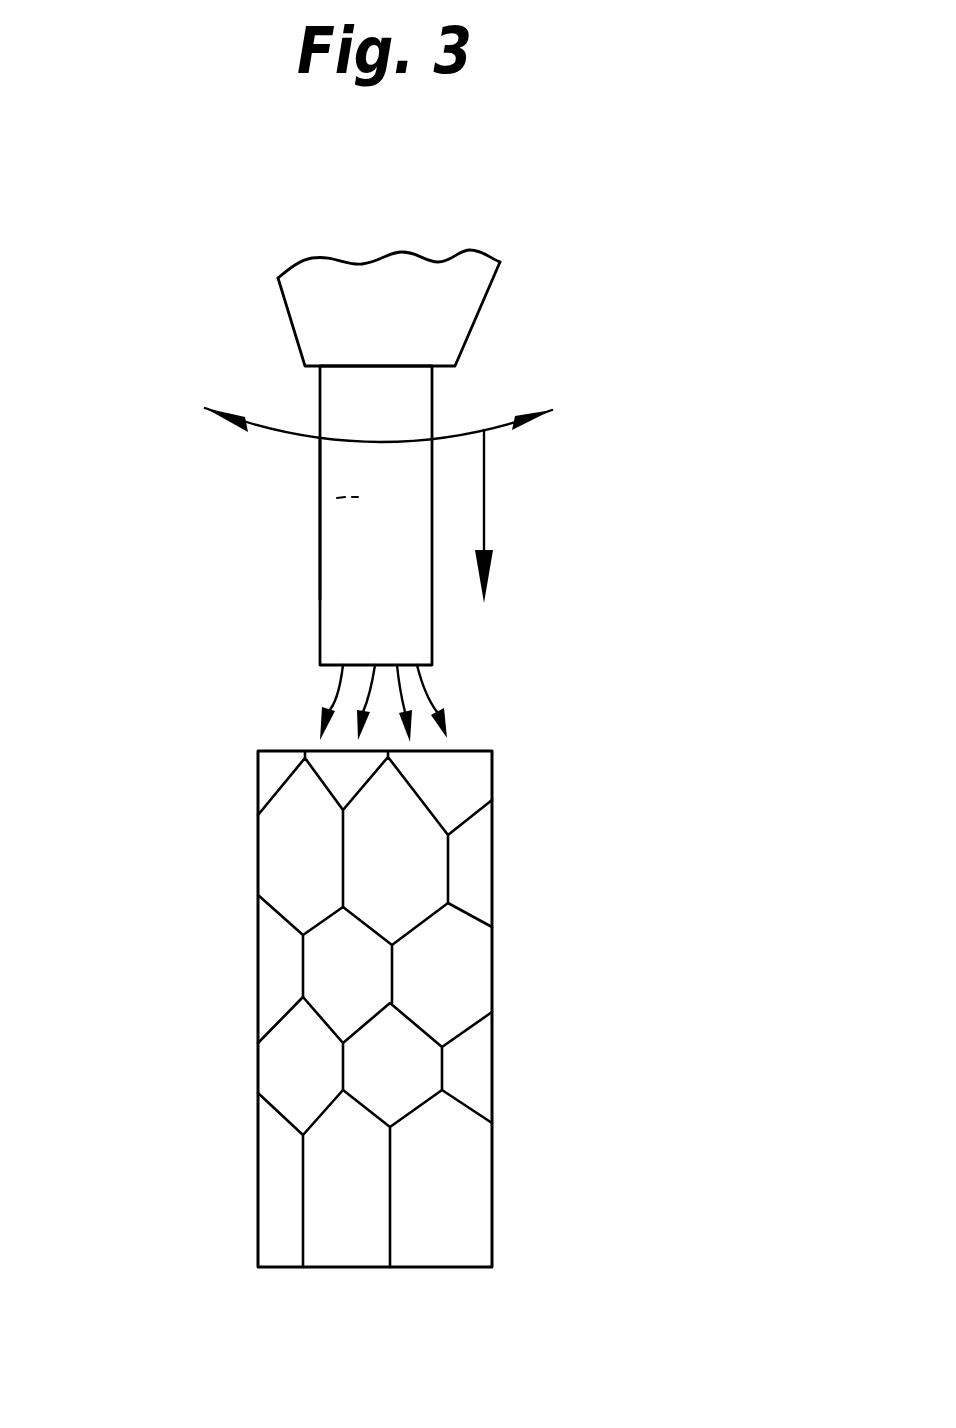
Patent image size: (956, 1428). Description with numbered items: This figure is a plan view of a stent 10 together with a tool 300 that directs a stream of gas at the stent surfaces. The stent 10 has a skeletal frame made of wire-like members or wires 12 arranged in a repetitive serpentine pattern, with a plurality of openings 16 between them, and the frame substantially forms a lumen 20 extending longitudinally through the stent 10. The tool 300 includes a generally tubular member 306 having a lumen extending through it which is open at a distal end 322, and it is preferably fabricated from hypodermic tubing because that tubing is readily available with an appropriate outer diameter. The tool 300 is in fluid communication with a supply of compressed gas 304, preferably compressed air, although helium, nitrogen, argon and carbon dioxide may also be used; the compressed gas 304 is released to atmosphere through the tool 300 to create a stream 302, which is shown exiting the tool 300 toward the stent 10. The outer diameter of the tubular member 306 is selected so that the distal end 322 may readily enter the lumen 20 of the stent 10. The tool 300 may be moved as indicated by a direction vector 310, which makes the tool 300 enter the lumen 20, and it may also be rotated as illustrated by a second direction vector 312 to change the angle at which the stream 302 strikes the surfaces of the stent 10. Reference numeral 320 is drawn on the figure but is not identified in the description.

The stent 10 is at (360, 1050).
The wires 12 is at (436, 806).
The openings 16 is at (450, 970).
The lumen 20 is at (352, 1220).
The tool 300 is at (383, 473).
The stream 302 is at (528, 703).
The gas 304 is at (443, 722).
The tubular member 306 is at (378, 592).
The direction vector 310 is at (484, 503).
The direction vector 312 is at (500, 430).
The nozzle wall surface 320 is at (323, 505).
The distal end 322 is at (270, 704).